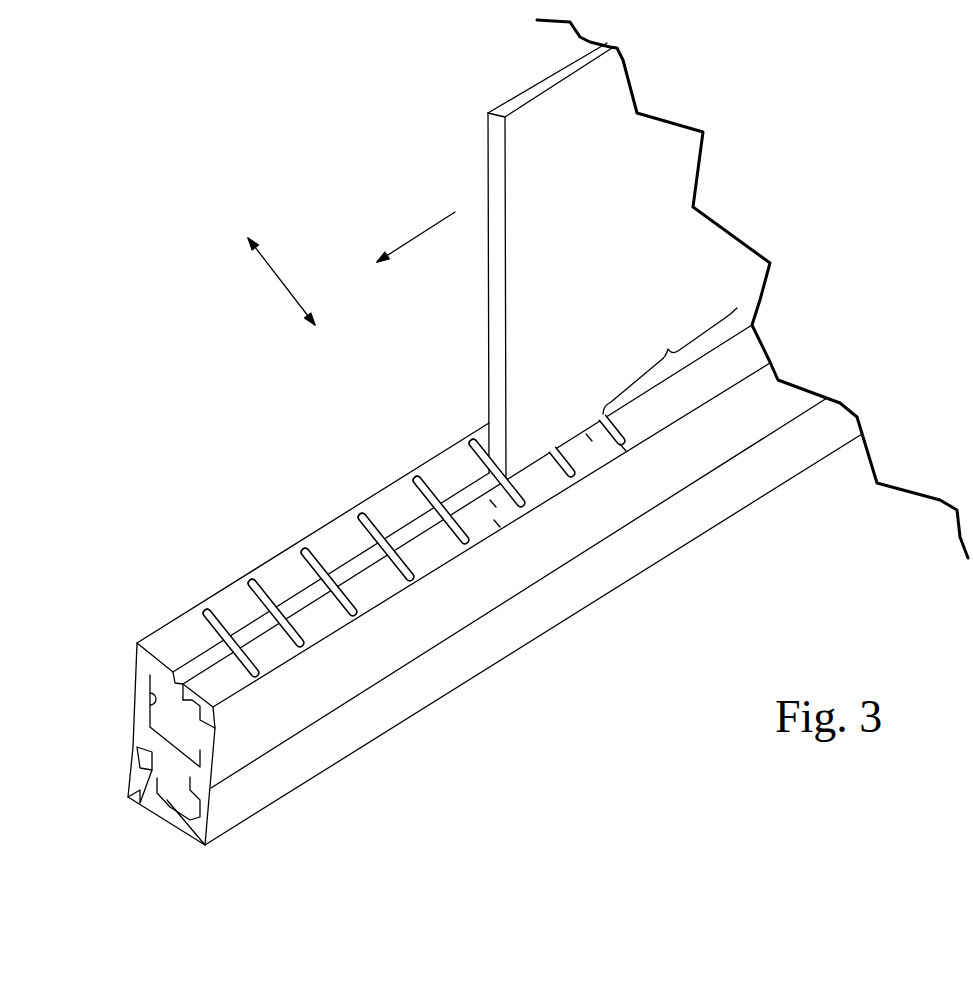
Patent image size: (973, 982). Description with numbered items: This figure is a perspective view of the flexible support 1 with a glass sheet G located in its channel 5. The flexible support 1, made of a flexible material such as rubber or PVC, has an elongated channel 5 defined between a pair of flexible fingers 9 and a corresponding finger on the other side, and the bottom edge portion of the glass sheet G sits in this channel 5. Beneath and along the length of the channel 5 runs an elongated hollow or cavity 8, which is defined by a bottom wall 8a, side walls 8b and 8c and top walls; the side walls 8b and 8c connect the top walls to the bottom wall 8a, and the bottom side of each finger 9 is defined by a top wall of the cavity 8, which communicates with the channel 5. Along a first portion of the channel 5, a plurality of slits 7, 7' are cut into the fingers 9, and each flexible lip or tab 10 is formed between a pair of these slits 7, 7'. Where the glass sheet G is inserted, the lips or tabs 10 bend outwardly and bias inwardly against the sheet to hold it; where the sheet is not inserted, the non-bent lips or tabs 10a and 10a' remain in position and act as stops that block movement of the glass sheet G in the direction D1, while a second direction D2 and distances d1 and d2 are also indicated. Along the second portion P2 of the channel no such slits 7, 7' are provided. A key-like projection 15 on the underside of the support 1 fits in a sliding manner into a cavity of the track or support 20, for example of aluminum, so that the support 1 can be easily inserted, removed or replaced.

The flexible support 1 is at (182, 373).
The channel 5 is at (198, 668).
The slit 7 is at (467, 565).
The slit 7' is at (313, 547).
The hollow or cavity 8 is at (175, 722).
The bottom wall 8a is at (222, 835).
The side wall 8b is at (227, 732).
The side wall 8c is at (163, 695).
The flexible finger 9 is at (365, 585).
The flexible lip or tab 10 is at (410, 513).
The non-bent lip or tab 10a is at (340, 494).
The non-bent lip or tab 10a' is at (559, 541).
The key-like projection 15 is at (155, 767).
The track or support 20 is at (140, 803).
The glass sheet G is at (672, 173).
The second portion of the channel P2 is at (666, 352).
The direction D1 is at (430, 232).
The second direction D2 is at (290, 288).
The first distance d1 is at (588, 438).
The second distance d2 is at (492, 505).